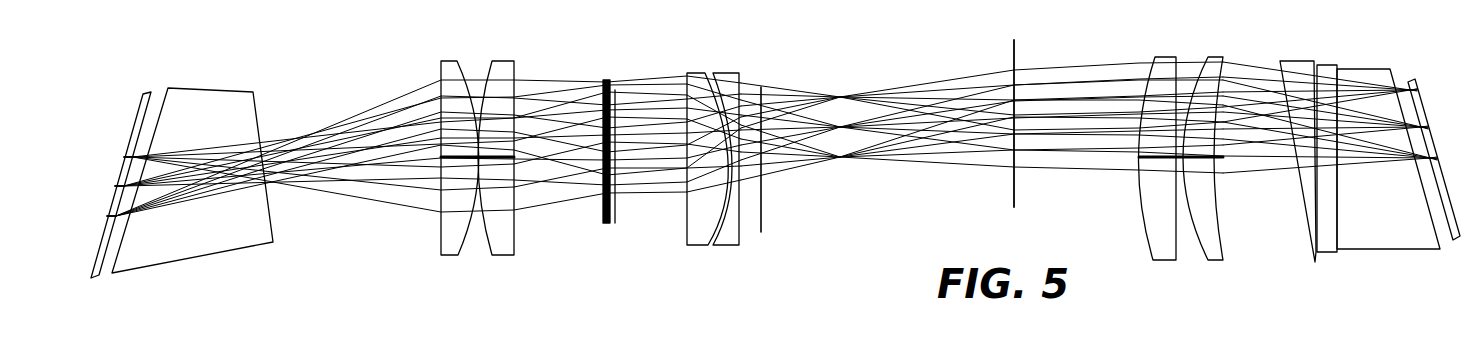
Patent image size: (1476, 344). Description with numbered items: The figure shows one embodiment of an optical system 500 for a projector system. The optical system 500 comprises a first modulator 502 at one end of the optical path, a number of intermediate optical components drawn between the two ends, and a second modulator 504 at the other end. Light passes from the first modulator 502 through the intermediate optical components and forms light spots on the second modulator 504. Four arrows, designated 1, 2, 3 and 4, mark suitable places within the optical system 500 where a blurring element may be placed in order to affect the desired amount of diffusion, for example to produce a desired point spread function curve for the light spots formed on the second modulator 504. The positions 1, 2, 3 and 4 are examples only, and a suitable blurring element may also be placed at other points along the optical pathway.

The first blurring element placement location 1 is at (312, 240).
The second blurring element placement location 2 is at (607, 245).
The third blurring element placement location 3 is at (827, 182).
The fourth blurring element placement location 4 is at (1260, 200).
The optical system 500 is at (720, 57).
The first modulator 502 is at (205, 76).
The second modulator 504 is at (1368, 68).